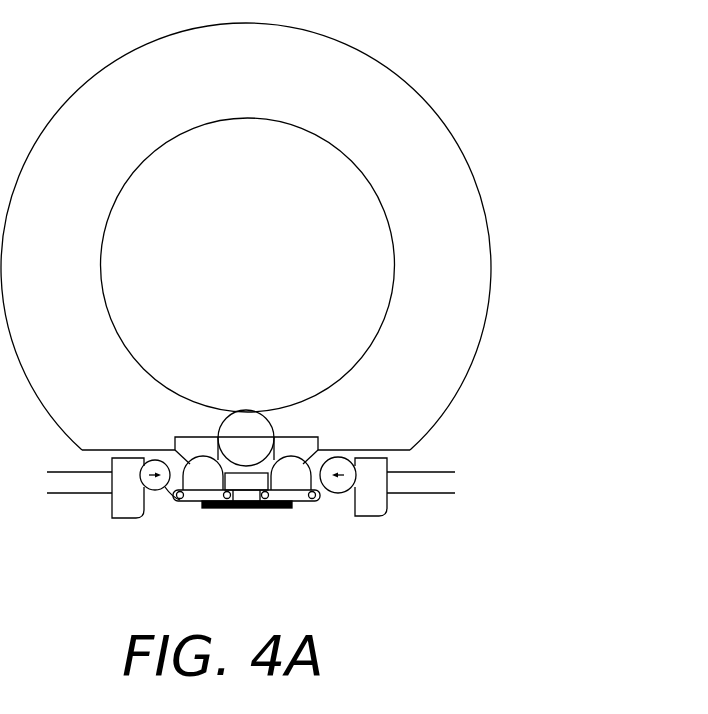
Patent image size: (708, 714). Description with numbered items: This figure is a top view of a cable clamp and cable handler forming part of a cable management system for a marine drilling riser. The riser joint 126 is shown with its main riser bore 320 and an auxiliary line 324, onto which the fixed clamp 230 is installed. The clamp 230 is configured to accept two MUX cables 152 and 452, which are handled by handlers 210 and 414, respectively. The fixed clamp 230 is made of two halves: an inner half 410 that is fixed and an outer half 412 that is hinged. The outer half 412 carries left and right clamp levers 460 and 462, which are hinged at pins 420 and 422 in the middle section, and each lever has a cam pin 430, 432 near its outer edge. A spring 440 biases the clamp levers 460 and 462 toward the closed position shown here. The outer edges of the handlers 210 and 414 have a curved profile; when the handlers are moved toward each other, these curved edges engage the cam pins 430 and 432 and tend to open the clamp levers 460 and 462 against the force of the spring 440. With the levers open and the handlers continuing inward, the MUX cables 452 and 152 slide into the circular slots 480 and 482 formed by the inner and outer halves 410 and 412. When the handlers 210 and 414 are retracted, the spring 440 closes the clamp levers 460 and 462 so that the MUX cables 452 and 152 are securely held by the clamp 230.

The riser joint 126 is at (496, 136).
The main riser bore 320 is at (267, 276).
The auxiliary line 324 is at (245, 432).
The right clamp lever 462 is at (305, 450).
The circular slot 482 is at (291, 466).
The circular slot 480 is at (197, 468).
The clamp 230 is at (318, 431).
The inner half 410 is at (318, 448).
The left clamp lever 460 is at (175, 438).
The handler 414 is at (123, 509).
The MUX cable 452 is at (152, 493).
The cam pin 430 is at (175, 503).
The pin 420 is at (235, 505).
The outer half 412 is at (234, 510).
The spring 440 is at (250, 510).
The cam pin 432 is at (318, 500).
The pin 422 is at (262, 510).
The MUX cable 152 is at (333, 492).
The handler 210 is at (377, 502).